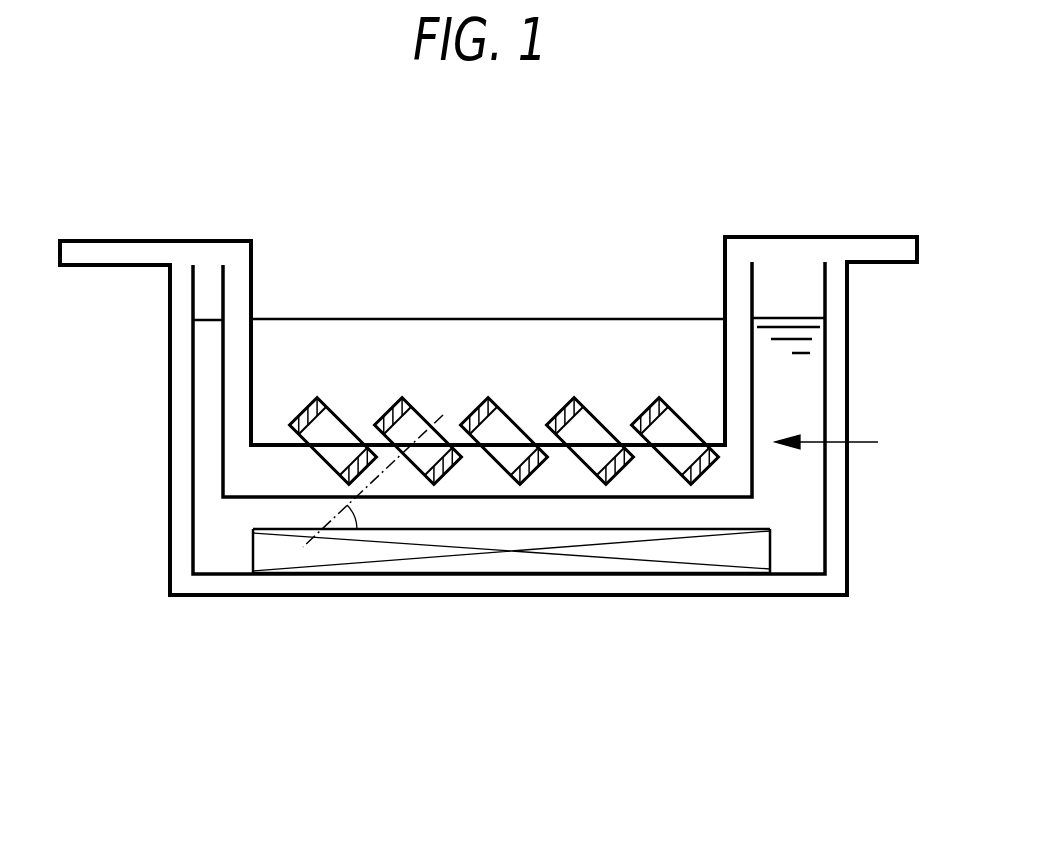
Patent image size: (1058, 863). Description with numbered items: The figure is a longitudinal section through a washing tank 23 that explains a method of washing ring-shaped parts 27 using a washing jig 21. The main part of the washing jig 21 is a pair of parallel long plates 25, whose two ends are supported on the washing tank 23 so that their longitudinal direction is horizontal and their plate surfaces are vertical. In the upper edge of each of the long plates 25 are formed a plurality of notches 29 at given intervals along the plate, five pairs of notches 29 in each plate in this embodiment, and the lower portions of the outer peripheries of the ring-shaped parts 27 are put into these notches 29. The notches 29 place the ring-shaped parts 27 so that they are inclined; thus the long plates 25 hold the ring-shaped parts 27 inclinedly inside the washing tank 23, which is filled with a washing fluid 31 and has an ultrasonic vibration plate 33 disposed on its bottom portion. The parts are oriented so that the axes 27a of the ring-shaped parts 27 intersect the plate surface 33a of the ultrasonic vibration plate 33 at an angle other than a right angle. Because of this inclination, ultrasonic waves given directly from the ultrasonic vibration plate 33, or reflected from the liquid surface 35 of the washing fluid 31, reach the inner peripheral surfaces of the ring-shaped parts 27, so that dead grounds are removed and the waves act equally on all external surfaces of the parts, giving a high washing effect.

The washing jig 21 is at (867, 187).
The washing tank 23 is at (835, 383).
The long plates 25 is at (275, 445).
The ring-shaped parts 27 is at (505, 390).
The axes of the ring-shaped parts 27a is at (443, 415).
The notches 29 is at (490, 445).
The washing fluid 31 is at (815, 333).
The ultrasonic vibration plate 33 is at (253, 548).
The plate surface of the ultrasonic vibration plate 33a is at (640, 520).
The liquid surface 35 is at (630, 318).